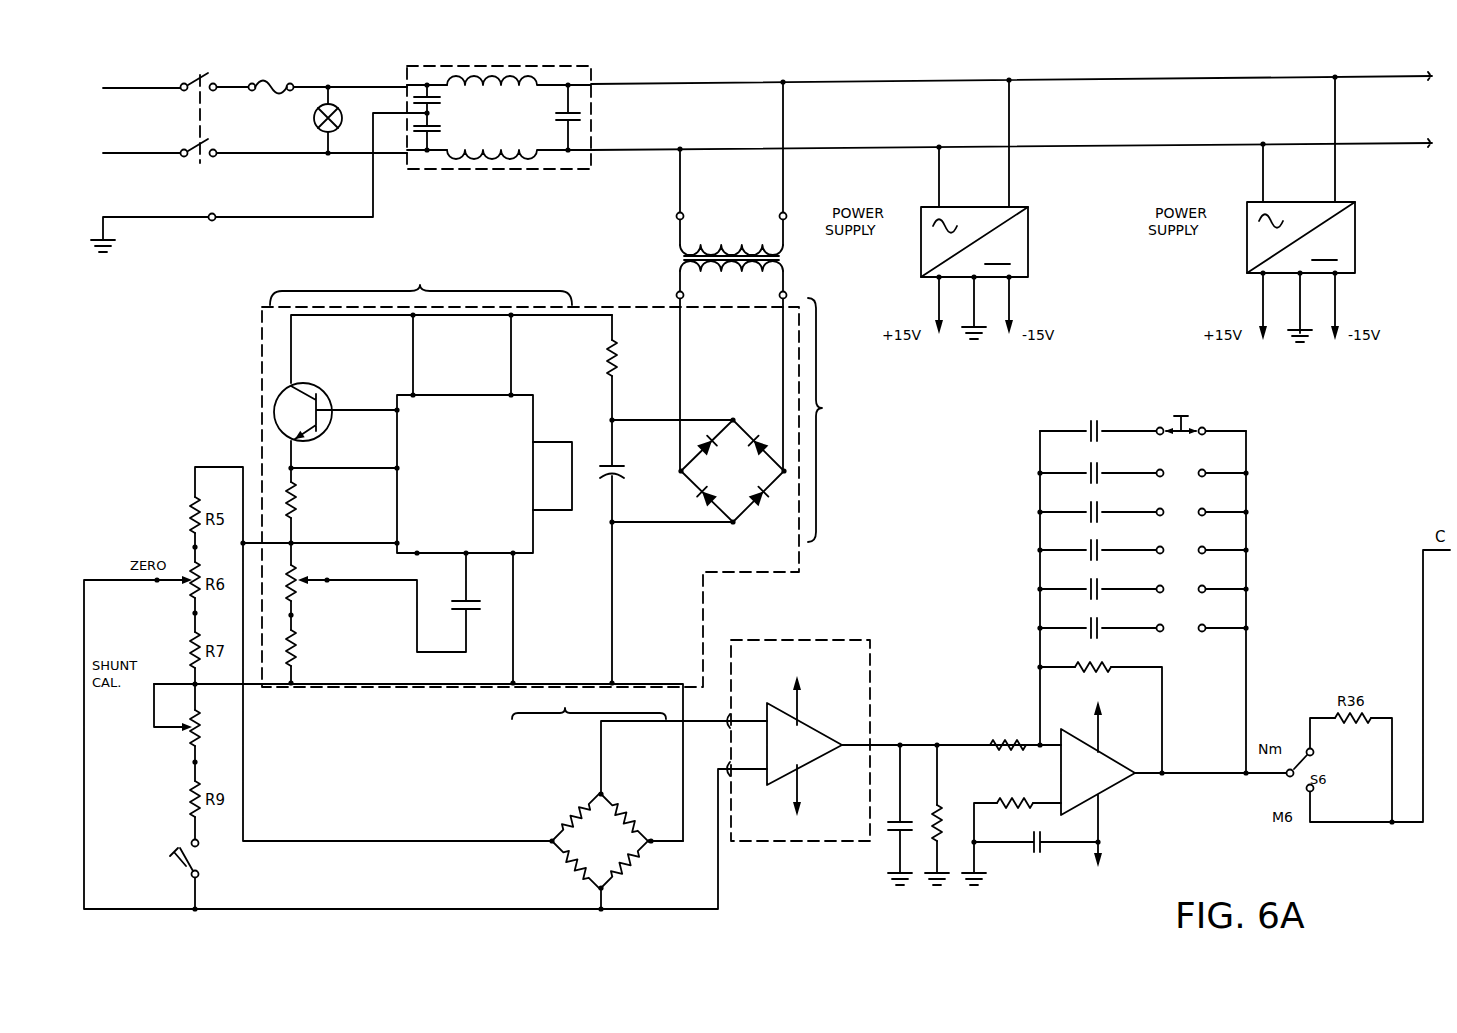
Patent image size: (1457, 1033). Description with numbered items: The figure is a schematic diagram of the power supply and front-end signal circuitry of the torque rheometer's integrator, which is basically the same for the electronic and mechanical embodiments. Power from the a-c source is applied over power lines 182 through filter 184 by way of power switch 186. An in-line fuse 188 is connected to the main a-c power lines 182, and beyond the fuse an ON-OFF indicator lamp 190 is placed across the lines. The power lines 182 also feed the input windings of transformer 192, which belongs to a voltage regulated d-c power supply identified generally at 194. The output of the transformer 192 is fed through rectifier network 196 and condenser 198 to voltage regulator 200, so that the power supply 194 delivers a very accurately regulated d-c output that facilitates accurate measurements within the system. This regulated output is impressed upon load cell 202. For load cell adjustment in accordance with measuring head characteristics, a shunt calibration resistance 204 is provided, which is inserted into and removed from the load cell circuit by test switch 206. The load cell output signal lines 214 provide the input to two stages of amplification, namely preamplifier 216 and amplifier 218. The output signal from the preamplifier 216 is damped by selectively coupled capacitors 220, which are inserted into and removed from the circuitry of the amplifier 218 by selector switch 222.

The power lines 182 is at (152, 86).
The filter 184 is at (592, 75).
The power switch 186 is at (208, 73).
The in-line fuse 188 is at (275, 82).
The ON-OFF indicator lamp 190 is at (312, 118).
The transformer 192 is at (783, 263).
The voltage regulated d-c power supply 194 is at (258, 325).
The rectifier network 196 is at (753, 420).
The condenser 198 is at (638, 470).
The voltage regulator 200 is at (427, 474).
The load cell 202 is at (560, 853).
The shunt calibration resistance 204 is at (153, 727).
The test switch 206 is at (178, 870).
The load cell output signal lines 214 is at (710, 745).
The preamplifier 216 is at (812, 729).
The amplifier 218 is at (1118, 762).
The capacitors 220 is at (1097, 456).
The selector switch 222 is at (1188, 428).